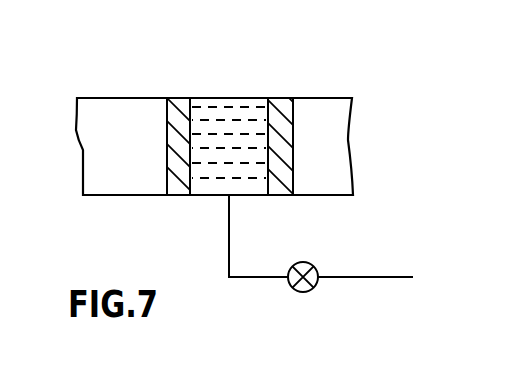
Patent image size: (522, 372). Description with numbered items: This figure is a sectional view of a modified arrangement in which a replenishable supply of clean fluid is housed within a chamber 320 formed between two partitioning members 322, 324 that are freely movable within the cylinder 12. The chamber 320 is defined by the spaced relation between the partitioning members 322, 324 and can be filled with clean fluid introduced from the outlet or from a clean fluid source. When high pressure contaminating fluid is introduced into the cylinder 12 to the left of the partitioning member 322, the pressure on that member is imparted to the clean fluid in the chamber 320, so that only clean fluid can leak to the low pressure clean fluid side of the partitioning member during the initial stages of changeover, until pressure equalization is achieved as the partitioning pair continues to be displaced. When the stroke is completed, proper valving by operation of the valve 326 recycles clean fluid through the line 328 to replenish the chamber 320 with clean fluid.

The cylinder 12 is at (310, 195).
The chamber 320 is at (232, 112).
The partitioning member 322 is at (177, 117).
The partitioning member 324 is at (283, 110).
The valve 326 is at (299, 292).
The line 328 is at (383, 277).